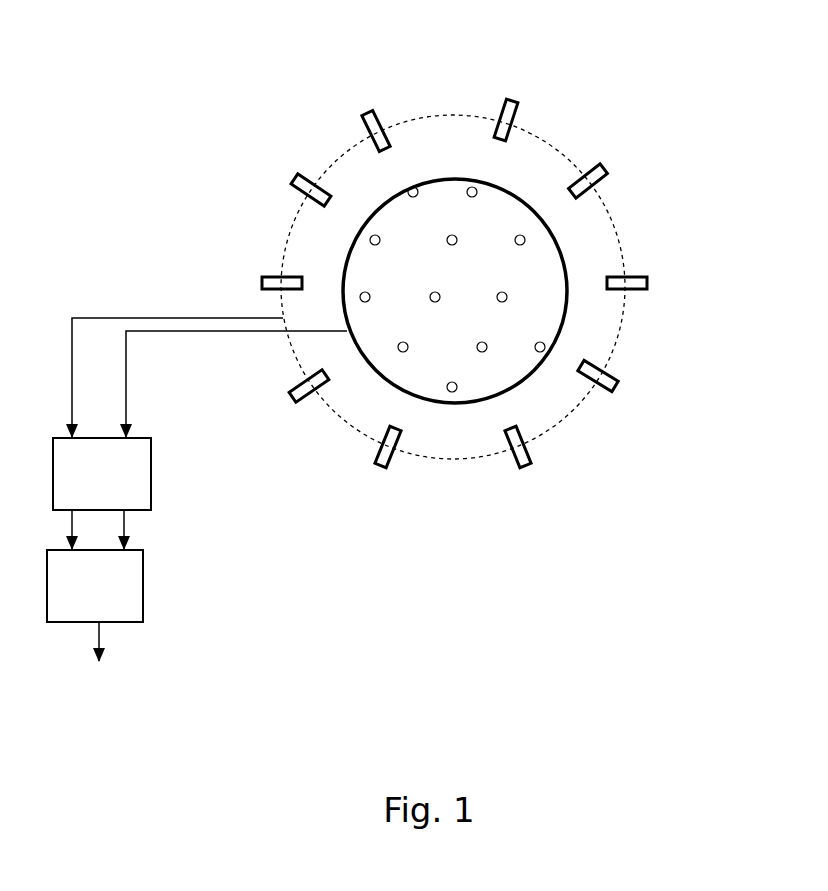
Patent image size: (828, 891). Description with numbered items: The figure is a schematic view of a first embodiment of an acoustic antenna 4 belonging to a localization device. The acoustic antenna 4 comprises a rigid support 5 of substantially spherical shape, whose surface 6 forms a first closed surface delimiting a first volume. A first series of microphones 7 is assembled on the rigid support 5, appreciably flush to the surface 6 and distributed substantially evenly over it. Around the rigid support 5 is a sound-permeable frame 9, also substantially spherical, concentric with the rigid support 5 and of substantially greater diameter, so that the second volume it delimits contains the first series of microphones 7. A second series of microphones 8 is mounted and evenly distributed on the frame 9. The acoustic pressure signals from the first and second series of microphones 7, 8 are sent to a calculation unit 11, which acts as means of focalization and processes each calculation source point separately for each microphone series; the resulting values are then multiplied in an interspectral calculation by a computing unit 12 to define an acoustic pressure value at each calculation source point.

The acoustic antenna 4 is at (285, 135).
The rigid support 5 is at (357, 277).
The surface 6 is at (440, 176).
The first series of microphones 7 is at (462, 402).
The second series of microphones 8 is at (607, 165).
The frame 9 is at (555, 150).
The calculation unit 11 is at (200, 414).
The computing unit 12 is at (95, 585).